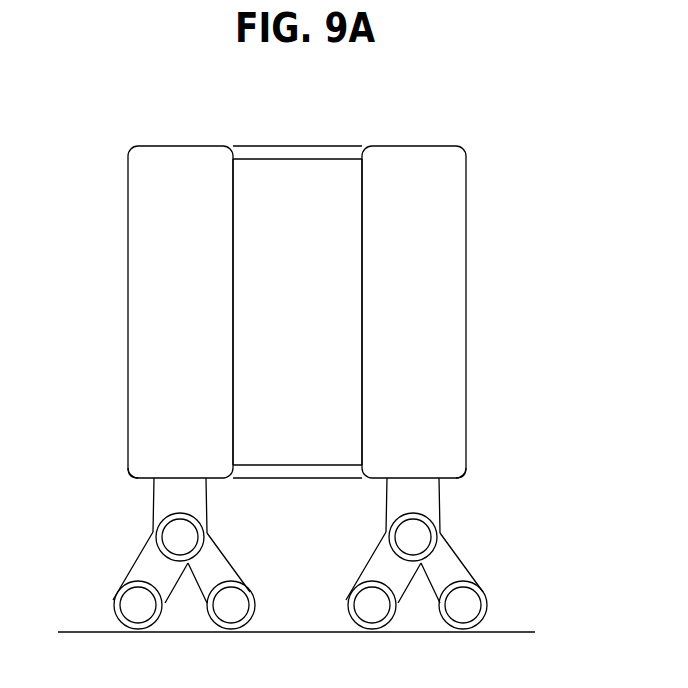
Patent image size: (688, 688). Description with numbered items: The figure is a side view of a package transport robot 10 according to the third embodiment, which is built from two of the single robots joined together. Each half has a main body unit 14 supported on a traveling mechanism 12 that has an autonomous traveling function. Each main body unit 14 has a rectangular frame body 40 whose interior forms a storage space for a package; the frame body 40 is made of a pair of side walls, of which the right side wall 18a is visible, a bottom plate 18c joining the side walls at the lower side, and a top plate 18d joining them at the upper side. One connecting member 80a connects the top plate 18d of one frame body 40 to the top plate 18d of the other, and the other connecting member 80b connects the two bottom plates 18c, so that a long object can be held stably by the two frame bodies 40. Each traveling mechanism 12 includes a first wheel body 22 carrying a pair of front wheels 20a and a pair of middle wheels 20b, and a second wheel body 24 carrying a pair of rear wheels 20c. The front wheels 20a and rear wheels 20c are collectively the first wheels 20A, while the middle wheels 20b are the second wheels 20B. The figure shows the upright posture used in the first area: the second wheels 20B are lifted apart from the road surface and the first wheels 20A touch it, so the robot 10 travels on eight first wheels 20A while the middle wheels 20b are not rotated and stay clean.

The package transport robot 10 is at (104, 126).
The traveling mechanism 12 is at (222, 549).
The main body unit 14 is at (125, 219).
The right side wall 18a is at (211, 313).
The bottom plate 18c is at (137, 478).
The top plate 18d is at (178, 146).
The front wheel 20a is at (108, 627).
The rear wheel 20c is at (251, 626).
The first wheels 20A is at (303, 634).
The middle wheel 20b is at (192, 504).
The second wheels 20B is at (357, 526).
The first wheel body 22 is at (148, 565).
The second wheel body 24 is at (217, 567).
The frame body 40 is at (149, 300).
The connecting member 80a is at (317, 146).
The connecting member 80b is at (317, 472).